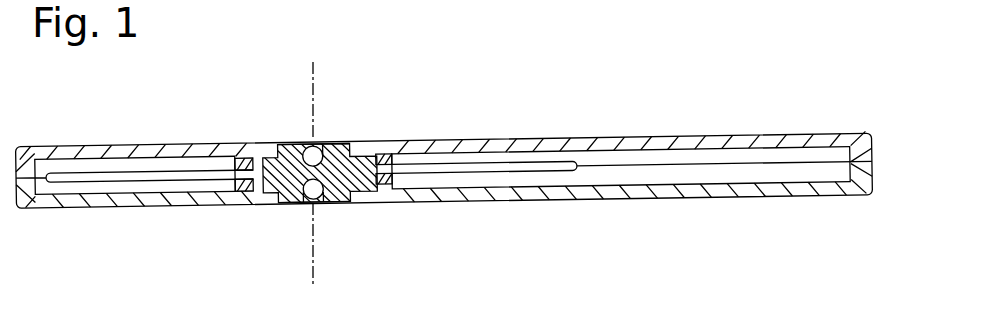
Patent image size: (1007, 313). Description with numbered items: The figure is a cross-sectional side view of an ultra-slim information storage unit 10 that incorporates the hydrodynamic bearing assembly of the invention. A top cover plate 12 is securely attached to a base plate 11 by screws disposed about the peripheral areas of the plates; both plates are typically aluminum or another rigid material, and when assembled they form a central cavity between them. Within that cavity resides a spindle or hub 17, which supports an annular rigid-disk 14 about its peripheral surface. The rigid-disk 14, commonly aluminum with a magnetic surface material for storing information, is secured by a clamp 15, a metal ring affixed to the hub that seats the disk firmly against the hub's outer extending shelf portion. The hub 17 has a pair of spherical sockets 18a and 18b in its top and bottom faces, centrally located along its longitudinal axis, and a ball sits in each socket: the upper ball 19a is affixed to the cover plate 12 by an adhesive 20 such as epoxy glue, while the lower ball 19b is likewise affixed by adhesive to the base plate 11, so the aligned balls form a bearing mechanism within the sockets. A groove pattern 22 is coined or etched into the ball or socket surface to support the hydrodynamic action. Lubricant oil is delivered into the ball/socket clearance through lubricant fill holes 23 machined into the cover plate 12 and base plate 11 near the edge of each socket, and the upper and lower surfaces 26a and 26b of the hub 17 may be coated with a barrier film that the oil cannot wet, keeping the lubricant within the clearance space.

The information storage unit 10 is at (703, 100).
The base plate 11 is at (665, 202).
The top cover plate 12 is at (163, 140).
The rigid-disk 14 is at (487, 165).
The clamp 15 is at (395, 167).
The hub 17 is at (250, 145).
The upper spherical socket 18a is at (332, 142).
The lower spherical socket 18b is at (327, 203).
The upper ball 19a is at (315, 143).
The lower ball 19b is at (288, 203).
The adhesive 20 is at (302, 143).
The groove pattern 22 is at (320, 203).
The lubricant fill holes 23 is at (303, 202).
The upper surface of hub 26a is at (382, 143).
The lower surface of hub 26b is at (372, 193).